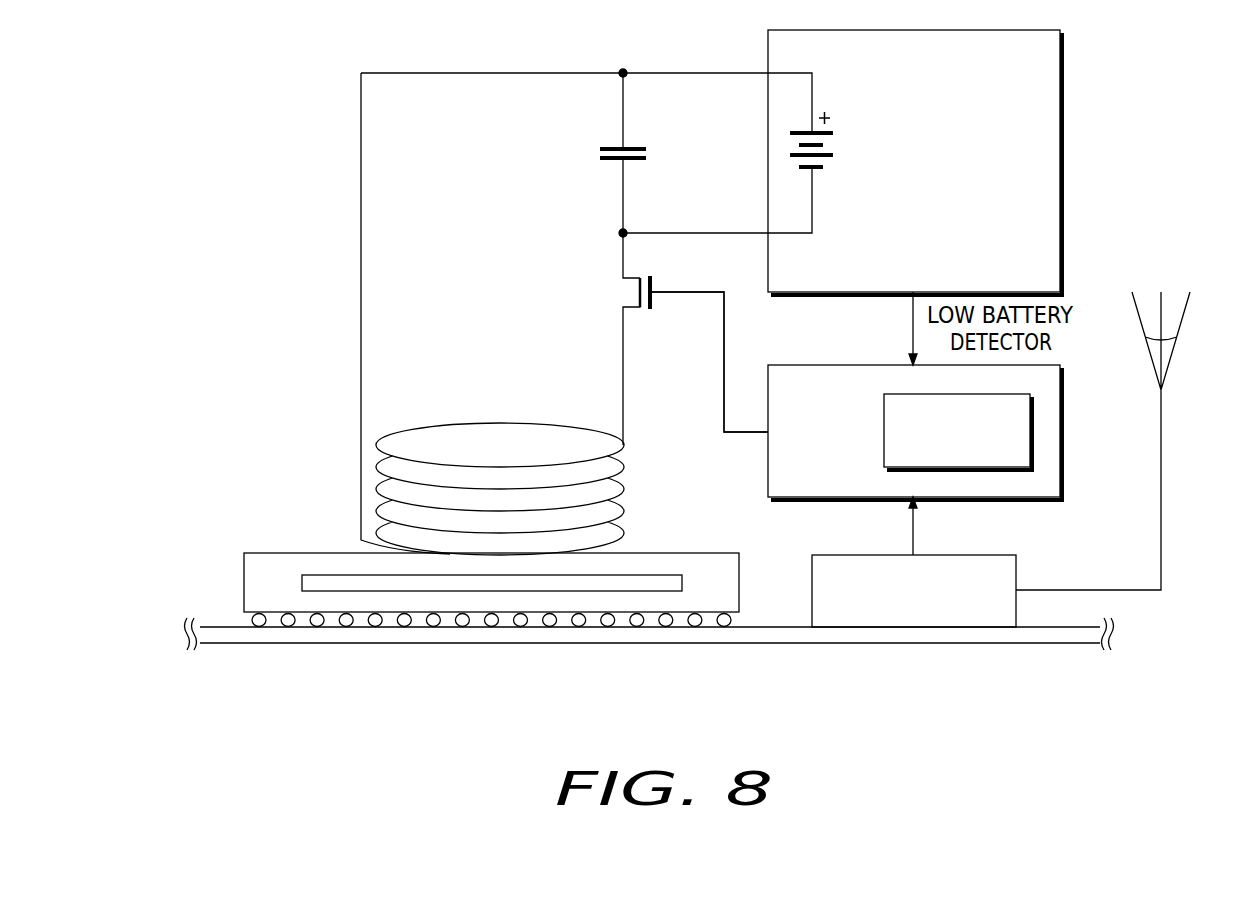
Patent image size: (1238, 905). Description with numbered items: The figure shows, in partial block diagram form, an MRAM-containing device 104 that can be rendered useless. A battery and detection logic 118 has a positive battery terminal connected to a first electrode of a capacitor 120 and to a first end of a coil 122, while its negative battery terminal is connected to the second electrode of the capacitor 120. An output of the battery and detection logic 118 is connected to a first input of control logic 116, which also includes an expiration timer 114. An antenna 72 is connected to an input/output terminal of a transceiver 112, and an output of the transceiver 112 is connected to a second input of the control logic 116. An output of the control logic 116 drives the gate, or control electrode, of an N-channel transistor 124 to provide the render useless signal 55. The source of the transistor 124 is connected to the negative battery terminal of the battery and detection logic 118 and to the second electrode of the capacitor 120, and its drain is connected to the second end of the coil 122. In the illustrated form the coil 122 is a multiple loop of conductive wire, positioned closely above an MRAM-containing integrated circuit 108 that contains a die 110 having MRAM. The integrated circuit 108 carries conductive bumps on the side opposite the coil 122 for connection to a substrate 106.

The render useless signal 55 is at (688, 298).
The antenna 72 is at (1168, 372).
The MRAM-containing device 104 is at (496, 728).
The substrate 106 is at (338, 644).
The MRAM-containing integrated circuit 108 is at (245, 582).
The die 110 is at (321, 575).
The transceiver 112 is at (1018, 569).
The expiration timer 114 is at (1033, 425).
The control logic 116 is at (860, 481).
The battery and detection logic 118 is at (1034, 247).
The capacitor 120 is at (612, 142).
The coil 122 is at (455, 423).
The N-channel transistor 124 is at (634, 293).